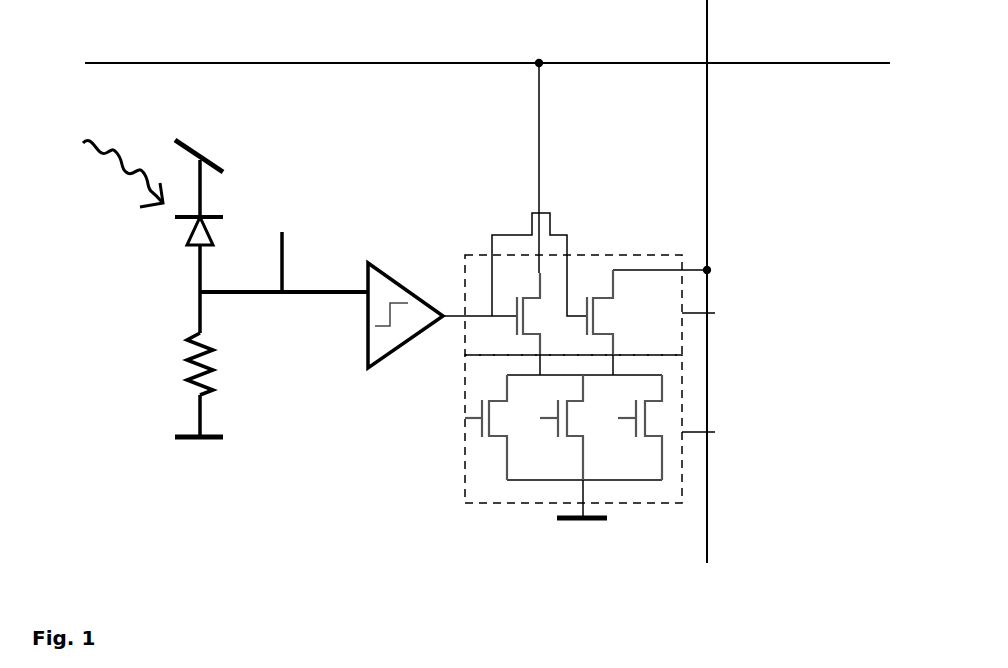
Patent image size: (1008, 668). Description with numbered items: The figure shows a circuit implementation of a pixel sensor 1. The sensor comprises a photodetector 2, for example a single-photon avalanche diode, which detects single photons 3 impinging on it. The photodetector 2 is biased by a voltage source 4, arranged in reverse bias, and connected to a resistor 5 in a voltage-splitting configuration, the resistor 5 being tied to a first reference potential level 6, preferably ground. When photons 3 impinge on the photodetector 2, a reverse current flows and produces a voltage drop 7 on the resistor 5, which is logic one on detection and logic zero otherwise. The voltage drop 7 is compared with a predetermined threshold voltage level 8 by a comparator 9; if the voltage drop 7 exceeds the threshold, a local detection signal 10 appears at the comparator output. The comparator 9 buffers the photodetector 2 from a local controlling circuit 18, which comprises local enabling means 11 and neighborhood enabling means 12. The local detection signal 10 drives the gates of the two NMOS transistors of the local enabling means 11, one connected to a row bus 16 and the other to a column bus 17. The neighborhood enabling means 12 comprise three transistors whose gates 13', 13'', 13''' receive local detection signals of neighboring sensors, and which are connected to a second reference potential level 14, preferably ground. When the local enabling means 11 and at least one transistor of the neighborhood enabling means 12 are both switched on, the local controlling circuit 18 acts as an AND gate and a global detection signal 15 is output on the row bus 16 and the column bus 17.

The pixel sensor 1 is at (108, 483).
The photodetector 2 is at (168, 232).
The photons 3 is at (110, 150).
The voltage source 4 is at (217, 162).
The resistor 5 is at (213, 372).
The first reference potential level 6 is at (213, 435).
The voltage drop 7 is at (285, 229).
The predetermined threshold voltage level 8 is at (368, 348).
The comparator 9 is at (392, 275).
The local detection signal 10 is at (460, 310).
The local enabling means 11 is at (612, 305).
The neighborhood enabling means 12 is at (612, 429).
The gate 13' is at (436, 427).
The gate 13'' is at (546, 427).
The gate 13''' is at (626, 427).
The second reference potential level 14 is at (583, 525).
The global detection signal 15 is at (540, 60).
The row bus 16 is at (730, 65).
The column bus 17 is at (707, 193).
The local controlling circuit 18 is at (760, 327).